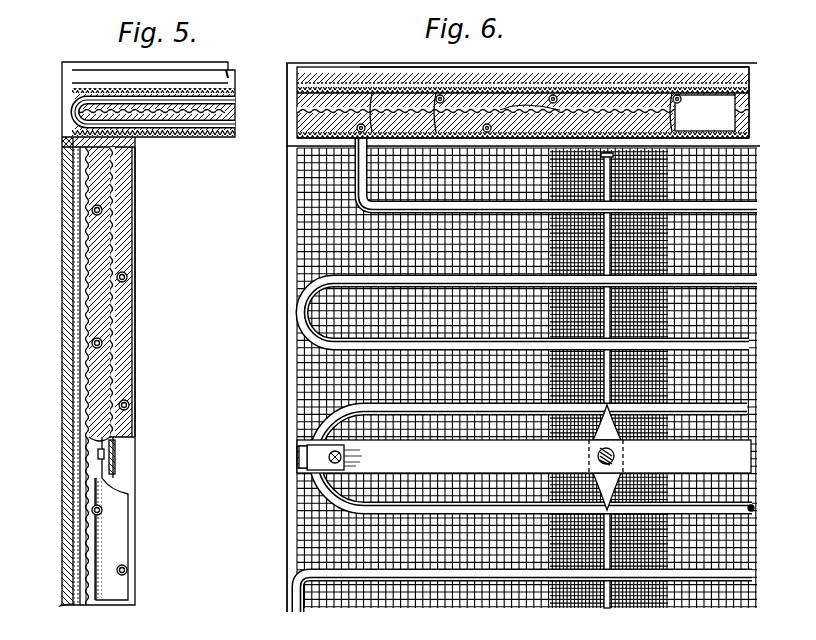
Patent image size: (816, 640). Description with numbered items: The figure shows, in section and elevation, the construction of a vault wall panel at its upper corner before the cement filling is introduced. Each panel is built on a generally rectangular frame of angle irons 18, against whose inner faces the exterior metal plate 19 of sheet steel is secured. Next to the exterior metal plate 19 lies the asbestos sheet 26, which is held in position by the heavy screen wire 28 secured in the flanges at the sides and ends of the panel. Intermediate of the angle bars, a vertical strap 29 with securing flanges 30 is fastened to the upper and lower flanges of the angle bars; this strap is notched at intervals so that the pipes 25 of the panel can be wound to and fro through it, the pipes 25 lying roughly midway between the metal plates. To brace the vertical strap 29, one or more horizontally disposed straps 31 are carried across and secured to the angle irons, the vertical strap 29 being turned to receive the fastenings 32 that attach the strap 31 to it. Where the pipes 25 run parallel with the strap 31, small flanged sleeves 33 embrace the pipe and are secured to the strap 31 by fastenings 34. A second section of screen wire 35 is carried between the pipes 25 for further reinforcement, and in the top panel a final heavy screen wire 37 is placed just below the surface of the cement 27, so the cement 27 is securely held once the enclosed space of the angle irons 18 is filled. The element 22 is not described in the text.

In FIG. 5, the angle irons 18 is at (62, 195).
In FIG. 6, the angle irons 18 is at (297, 186).
In FIG. 5, the exterior metal plate 19 is at (76, 322).
In FIG. 6, the cable 22 is at (530, 120).
In FIG. 5, the pipes 25 is at (128, 277).
In FIG. 5, the asbestos sheet 26 is at (85, 396).
In FIG. 5, the cement 27 is at (120, 382).
In FIG. 5, the heavy screen wire 28 is at (90, 470).
In FIG. 6, the heavy screen wire 28 is at (315, 376).
In FIG. 5, the strap 29 is at (120, 505).
In FIG. 6, the securing flanges 30 is at (612, 156).
In FIG. 5, the horizontally disposed strap 31 is at (112, 470).
In FIG. 6, the horizontally disposed strap 31 is at (527, 372).
In FIG. 5, the fastenings 32 is at (116, 453).
In FIG. 6, the fastenings 32 is at (614, 454).
In FIG. 6, the small flanged sleeves 33 is at (307, 463).
In FIG. 6, the fastenings 34 is at (346, 462).
In FIG. 5, the second section of screen wire 35 is at (110, 338).
In FIG. 6, the second section of screen wire 35 is at (636, 608).
In FIG. 5, the final heavy screen wire 37 is at (228, 138).
In FIG. 6, the final heavy screen wire 37 is at (750, 140).